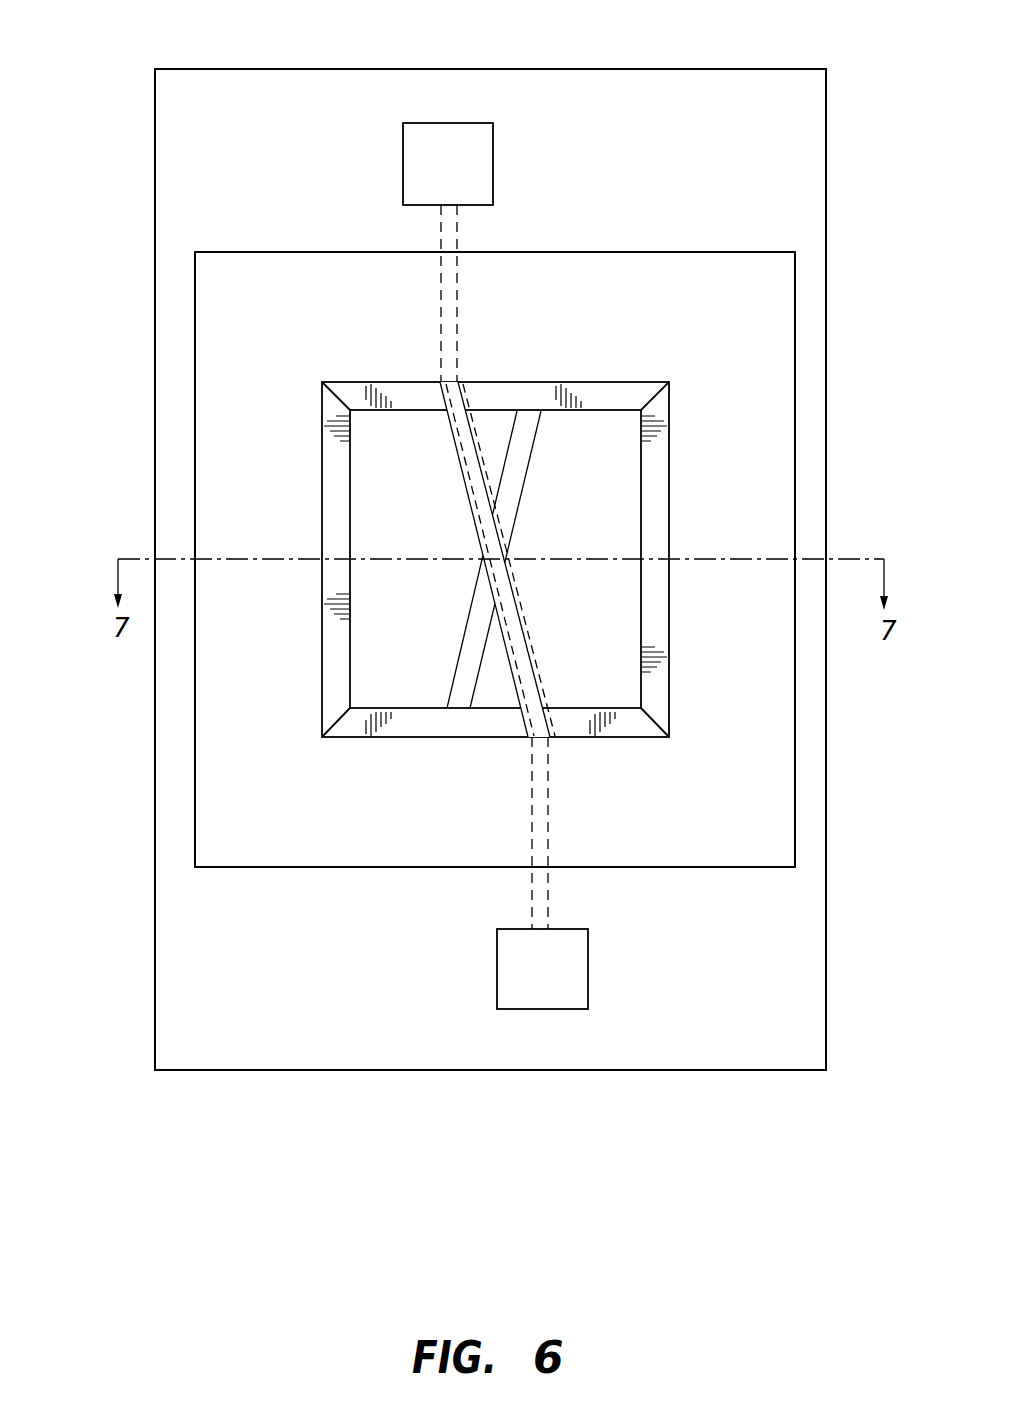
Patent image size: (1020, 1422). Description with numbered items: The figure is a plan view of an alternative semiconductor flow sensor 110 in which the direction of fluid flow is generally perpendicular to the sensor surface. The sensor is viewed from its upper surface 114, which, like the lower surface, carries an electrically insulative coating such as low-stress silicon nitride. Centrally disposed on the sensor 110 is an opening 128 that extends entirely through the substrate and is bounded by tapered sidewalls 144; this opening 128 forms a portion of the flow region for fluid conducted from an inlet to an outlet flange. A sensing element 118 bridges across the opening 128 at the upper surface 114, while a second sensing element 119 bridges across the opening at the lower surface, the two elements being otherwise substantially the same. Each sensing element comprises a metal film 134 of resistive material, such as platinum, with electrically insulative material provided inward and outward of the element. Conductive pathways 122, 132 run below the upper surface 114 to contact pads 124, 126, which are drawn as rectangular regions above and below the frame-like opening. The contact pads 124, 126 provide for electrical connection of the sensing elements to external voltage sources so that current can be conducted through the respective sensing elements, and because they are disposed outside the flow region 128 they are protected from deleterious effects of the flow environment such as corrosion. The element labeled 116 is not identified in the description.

The semiconductor flow sensor 110 is at (131, 233).
The upper surface 114 is at (717, 126).
The base plate 116 is at (750, 342).
The sensing element 118 is at (523, 623).
The sensing element 119 is at (520, 495).
The conductive pathway 122 is at (458, 231).
The contact pad 124 is at (447, 143).
The contact pad 126 is at (538, 992).
The opening 128 is at (618, 688).
The conductive pathway 132 is at (550, 902).
The metal film 134 is at (470, 502).
The tapered sidewall 144 is at (333, 688).